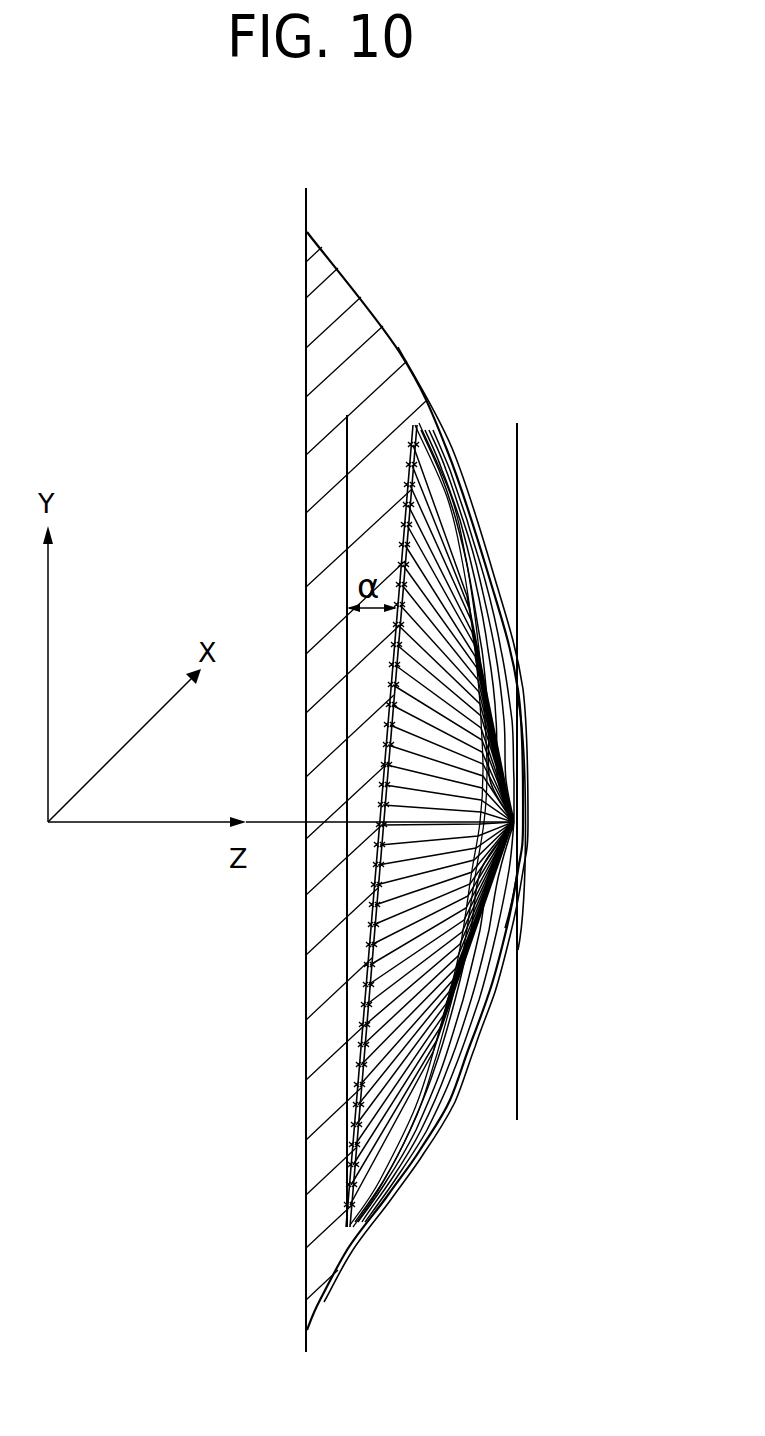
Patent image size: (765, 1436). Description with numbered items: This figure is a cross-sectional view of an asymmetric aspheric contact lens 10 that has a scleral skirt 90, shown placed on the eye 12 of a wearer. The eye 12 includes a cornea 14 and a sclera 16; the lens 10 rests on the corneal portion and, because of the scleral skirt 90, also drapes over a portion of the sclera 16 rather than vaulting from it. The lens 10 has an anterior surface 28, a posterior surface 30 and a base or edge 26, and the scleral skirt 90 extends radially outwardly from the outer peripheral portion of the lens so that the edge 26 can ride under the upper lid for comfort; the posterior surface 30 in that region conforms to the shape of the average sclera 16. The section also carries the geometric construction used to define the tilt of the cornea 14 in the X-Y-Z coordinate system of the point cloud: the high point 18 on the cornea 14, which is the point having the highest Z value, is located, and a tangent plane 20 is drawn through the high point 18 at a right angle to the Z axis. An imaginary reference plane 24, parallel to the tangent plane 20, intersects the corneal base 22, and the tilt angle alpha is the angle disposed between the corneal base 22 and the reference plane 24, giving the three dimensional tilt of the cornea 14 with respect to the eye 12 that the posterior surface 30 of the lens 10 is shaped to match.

The asymmetric aspheric contact lens 10 is at (504, 560).
The eye 12 is at (292, 306).
The cornea 14 is at (397, 843).
The sclera 16 is at (312, 1226).
The high point 18 is at (513, 785).
The tangent plane 20 is at (521, 1086).
The corneal base 22 is at (392, 678).
The reference plane 24 is at (323, 485).
The base or edge 26 is at (440, 426).
The anterior surface 28 is at (520, 682).
The posterior surface 30 is at (510, 910).
The scleral skirt 90 is at (403, 356).